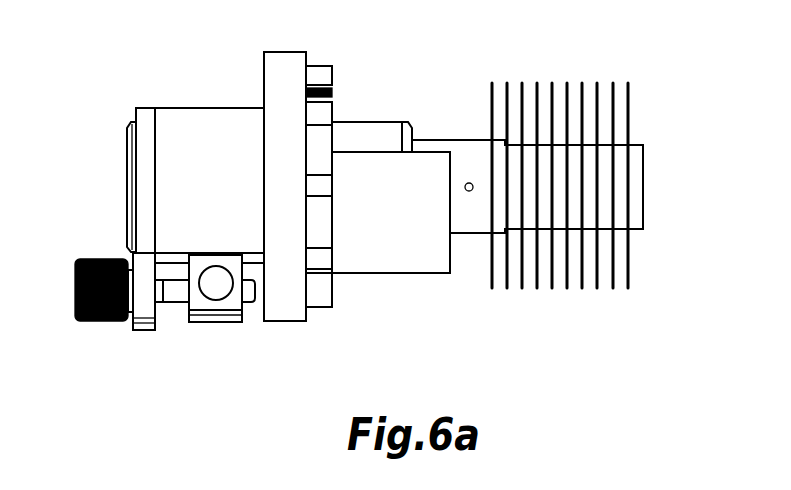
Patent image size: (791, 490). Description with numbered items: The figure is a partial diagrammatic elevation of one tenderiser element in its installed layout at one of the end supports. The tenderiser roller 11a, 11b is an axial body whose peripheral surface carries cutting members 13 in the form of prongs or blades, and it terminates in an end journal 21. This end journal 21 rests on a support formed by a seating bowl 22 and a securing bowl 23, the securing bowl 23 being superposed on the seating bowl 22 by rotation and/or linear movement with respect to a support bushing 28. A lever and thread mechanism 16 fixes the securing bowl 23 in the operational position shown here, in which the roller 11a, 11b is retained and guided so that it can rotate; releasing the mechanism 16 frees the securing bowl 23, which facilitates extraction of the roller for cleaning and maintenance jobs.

The support bushing 28 is at (205, 122).
The securing bowl 23 is at (377, 128).
The seating bowl 22 is at (392, 256).
The end journal 21 is at (436, 145).
The cutting members 13 is at (573, 74).
The lever and thread mechanism 16 is at (75, 298).
The tenderiser roller 11a is at (636, 218).
The tenderiser roller 11b is at (596, 246).